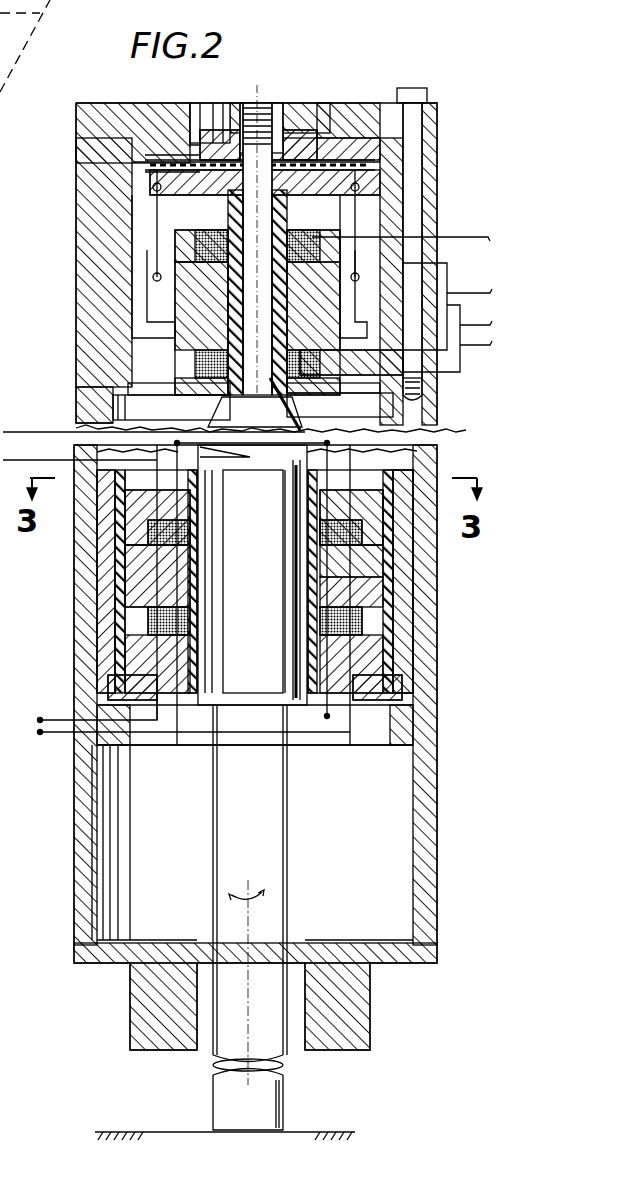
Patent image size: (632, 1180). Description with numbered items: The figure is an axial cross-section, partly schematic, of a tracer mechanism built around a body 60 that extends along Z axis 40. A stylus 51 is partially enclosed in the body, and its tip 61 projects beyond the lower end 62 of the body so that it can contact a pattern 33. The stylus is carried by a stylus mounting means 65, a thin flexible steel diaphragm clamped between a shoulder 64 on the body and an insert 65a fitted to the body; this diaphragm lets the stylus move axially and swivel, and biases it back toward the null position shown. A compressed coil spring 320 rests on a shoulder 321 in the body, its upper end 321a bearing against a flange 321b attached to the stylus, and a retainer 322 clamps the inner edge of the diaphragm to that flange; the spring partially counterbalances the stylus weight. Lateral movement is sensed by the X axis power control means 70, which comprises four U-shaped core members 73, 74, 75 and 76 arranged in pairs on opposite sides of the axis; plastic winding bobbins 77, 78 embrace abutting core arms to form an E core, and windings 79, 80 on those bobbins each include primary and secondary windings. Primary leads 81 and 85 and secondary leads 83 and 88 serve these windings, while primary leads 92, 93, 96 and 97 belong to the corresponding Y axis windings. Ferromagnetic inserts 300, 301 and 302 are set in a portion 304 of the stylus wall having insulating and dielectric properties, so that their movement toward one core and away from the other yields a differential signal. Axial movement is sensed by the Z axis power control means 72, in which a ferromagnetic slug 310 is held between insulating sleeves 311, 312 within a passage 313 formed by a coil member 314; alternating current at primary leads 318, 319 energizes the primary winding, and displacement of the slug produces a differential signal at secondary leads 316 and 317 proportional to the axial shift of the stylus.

The retainer 322 is at (302, 130).
The insert 65a is at (365, 140).
The shoulder 64 is at (403, 156).
The stylus mounting means 65 is at (403, 180).
The flange 321b is at (152, 187).
The upper end of the spring 321a is at (150, 180).
The insulating sleeve 312 is at (288, 224).
The primary lead 318 is at (401, 229).
The compressed coil spring 320 is at (140, 245).
The shoulder 321 is at (152, 275).
The primary lead 319 is at (447, 305).
The coil member 314 is at (222, 306).
The secondary lead 316 is at (447, 337).
The secondary lead 317 is at (472, 352).
The ferromagnetic slug 310 is at (215, 333).
The Z axis power control means 72 is at (128, 380).
The insulating sleeve 311 is at (160, 400).
The portion of the stylus 304 is at (255, 404).
The passage 313 is at (292, 398).
The primary lead 85 is at (34, 434).
The primary lead 81 is at (34, 462).
The winding 80 is at (355, 530).
The winding 79 is at (125, 545).
The U-shaped core member 75 is at (360, 555).
The U-shaped core member 73 is at (110, 572).
The X axis power control means 70 is at (362, 615).
The U-shaped core member 74 is at (148, 610).
The plastic winding bobbin 78 is at (383, 640).
The U-shaped core member 76 is at (378, 650).
The plastic winding bobbin 77 is at (140, 632).
The ferromagnetic insert 301 is at (270, 635).
The ferromagnetic insert 300 is at (205, 668).
The ferromagnetic insert 302 is at (300, 672).
The secondary lead 83 is at (50, 718).
The primary lead 93 is at (10, 752).
The secondary lead 88 is at (60, 733).
The primary lead 97 is at (0, 894).
The body 60 is at (433, 842).
The Z axis 40 is at (250, 978).
The primary lead 92 is at (2, 968).
The primary lead 96 is at (5, 992).
The lower end of the body 62 is at (330, 1048).
The stylus 51 is at (175, 1085).
The pattern 33 is at (141, 1126).
The tip 61 is at (275, 1137).